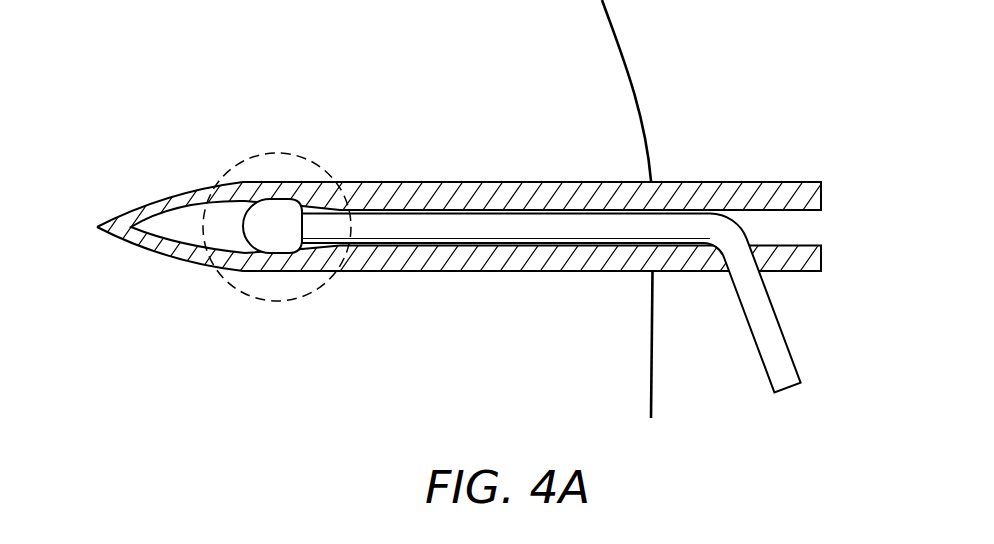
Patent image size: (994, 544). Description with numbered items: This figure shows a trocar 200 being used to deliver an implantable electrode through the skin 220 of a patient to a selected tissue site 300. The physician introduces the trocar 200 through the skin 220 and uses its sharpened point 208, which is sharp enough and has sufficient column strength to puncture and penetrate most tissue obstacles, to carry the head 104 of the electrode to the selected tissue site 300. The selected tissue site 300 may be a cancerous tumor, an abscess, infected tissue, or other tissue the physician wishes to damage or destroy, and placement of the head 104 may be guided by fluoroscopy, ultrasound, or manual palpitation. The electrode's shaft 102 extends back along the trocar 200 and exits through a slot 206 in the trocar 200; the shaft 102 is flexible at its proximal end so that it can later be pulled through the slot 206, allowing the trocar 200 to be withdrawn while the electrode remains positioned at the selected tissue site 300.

The shaft 102 is at (483, 227).
The head 104 is at (272, 242).
The trocar 200 is at (383, 198).
The slot 206 is at (770, 225).
The sharpened point 208 is at (143, 247).
The skin 220 is at (628, 70).
The selected tissue site 300 is at (250, 158).